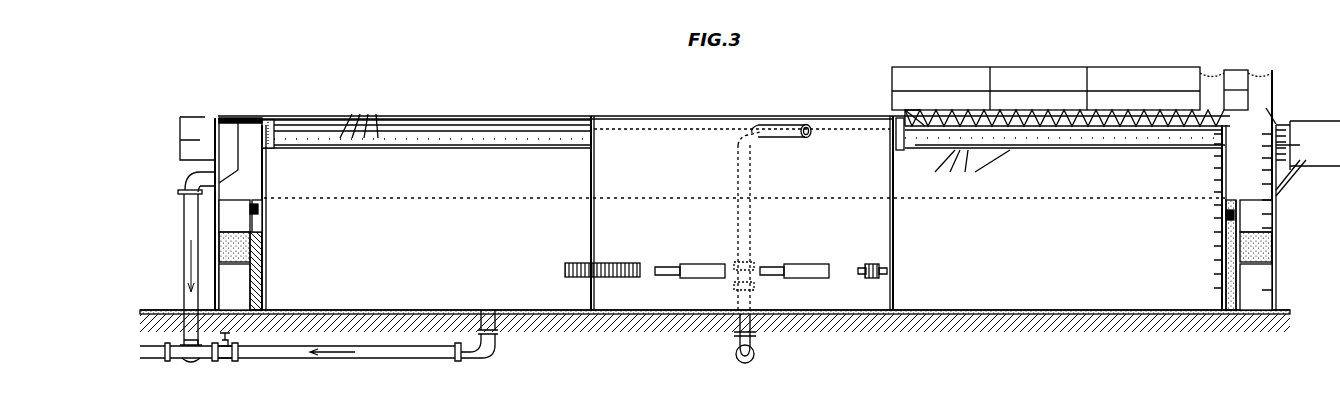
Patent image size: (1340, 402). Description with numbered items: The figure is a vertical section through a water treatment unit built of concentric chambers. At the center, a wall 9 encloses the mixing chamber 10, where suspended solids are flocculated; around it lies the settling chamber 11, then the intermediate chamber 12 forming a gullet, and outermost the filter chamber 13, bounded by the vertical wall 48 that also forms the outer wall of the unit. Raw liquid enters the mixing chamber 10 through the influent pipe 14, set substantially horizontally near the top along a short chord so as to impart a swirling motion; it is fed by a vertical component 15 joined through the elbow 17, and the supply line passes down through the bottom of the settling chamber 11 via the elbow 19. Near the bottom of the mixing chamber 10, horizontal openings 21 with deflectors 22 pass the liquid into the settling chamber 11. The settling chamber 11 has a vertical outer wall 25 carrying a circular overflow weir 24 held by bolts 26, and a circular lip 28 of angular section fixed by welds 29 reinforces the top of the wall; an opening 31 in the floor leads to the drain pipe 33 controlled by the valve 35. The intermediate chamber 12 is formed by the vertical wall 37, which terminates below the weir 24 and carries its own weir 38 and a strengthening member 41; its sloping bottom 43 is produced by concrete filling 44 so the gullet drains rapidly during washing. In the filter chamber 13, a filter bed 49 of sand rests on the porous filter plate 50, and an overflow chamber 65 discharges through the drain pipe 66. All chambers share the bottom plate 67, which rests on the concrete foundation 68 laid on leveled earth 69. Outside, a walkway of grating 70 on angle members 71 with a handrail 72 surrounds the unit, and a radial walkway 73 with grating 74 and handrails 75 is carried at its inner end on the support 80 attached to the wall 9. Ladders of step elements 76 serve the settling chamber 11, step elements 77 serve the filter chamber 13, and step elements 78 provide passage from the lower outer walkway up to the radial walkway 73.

The wall 9 is at (590, 180).
The mixing chamber 10 is at (742, 151).
The settling chamber 11 is at (734, 176).
The intermediate chamber 12 is at (258, 224).
The filter chamber 13 is at (745, 207).
The influent pipe 14 is at (778, 124).
The vertical component 15 is at (752, 184).
The elbow 17 is at (752, 270).
The elbow 19 is at (732, 286).
The horizontal openings 21 is at (668, 268).
The deflectors 22 is at (612, 264).
The circular overflow weir 24 is at (268, 124).
The vertical outer wall 25 is at (268, 170).
The bolts 26 is at (675, 132).
The circular lip 28 is at (385, 146).
The welds 29 is at (1278, 116).
The opening 31 is at (486, 308).
The drain pipe 33 is at (330, 358).
The valve 35 is at (232, 338).
The vertical wall 37 is at (254, 296).
The weir 38 is at (262, 185).
The strengthening member 41 is at (260, 207).
The sloping bottom 43 is at (256, 240).
The concrete filling 44 is at (258, 280).
The vertical wall 48 is at (222, 118).
The filter bed 49 is at (255, 252).
The porous filter plate 50 is at (745, 286).
The overflow chamber 65 is at (245, 142).
The drain pipe 66 is at (184, 240).
The bottom plate 67 is at (391, 293).
The concrete foundation 68 is at (452, 310).
The leveled earth 69 is at (600, 328).
The grating 70 is at (180, 174).
The angle members 71 is at (1300, 180).
The handrail 72 is at (180, 134).
The radial walkway 73 is at (1000, 52).
The grating 74 is at (960, 110).
The handrails 75 is at (945, 67).
The step elements 76 is at (1216, 186).
The step elements 77 is at (1266, 170).
The step elements 78 is at (1282, 124).
The support 80 is at (904, 150).